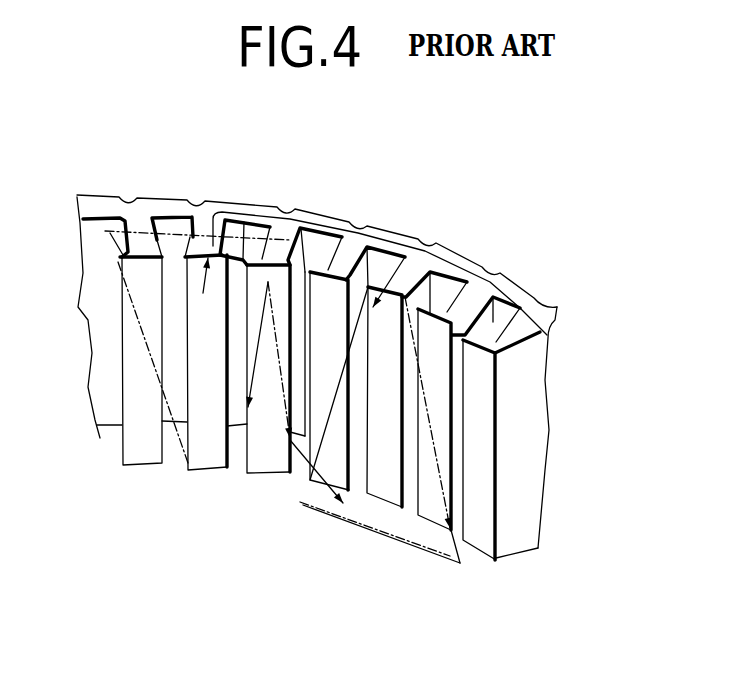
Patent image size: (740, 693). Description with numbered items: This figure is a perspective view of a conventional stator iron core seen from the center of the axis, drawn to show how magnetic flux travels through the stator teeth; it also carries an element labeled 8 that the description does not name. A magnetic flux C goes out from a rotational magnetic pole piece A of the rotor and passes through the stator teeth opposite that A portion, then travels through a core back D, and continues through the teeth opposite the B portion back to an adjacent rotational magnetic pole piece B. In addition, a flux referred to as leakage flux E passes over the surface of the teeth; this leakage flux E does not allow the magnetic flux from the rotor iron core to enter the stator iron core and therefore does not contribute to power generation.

The yoke 8 is at (462, 263).
The rotational magnetic pole piece A is at (246, 426).
The adjacent rotational magnetic pole piece B is at (407, 540).
The magnetic flux C is at (214, 262).
The core back D is at (248, 240).
The leakage flux E is at (318, 425).